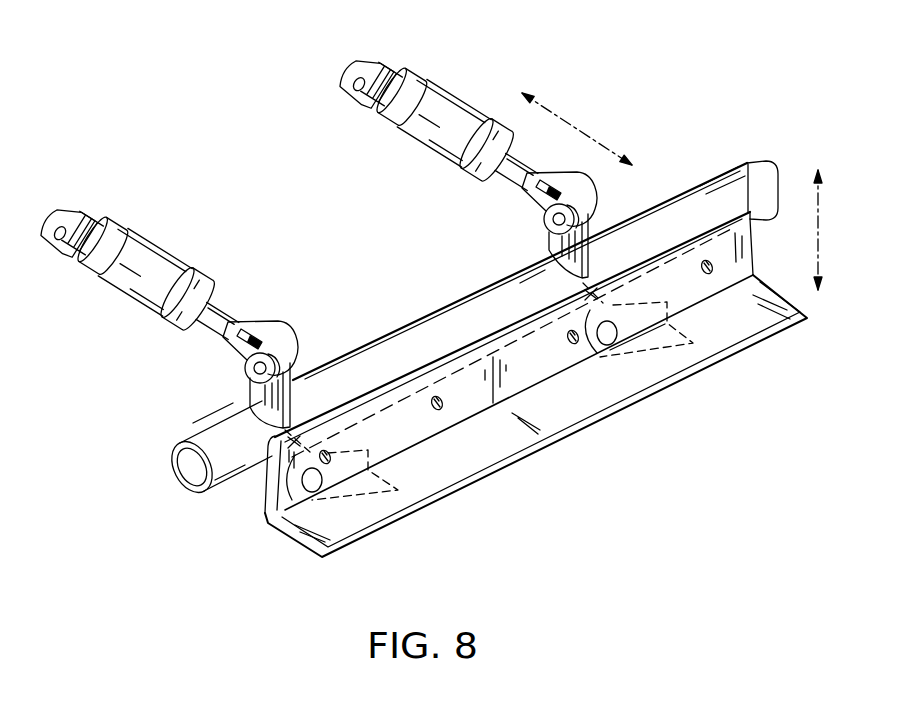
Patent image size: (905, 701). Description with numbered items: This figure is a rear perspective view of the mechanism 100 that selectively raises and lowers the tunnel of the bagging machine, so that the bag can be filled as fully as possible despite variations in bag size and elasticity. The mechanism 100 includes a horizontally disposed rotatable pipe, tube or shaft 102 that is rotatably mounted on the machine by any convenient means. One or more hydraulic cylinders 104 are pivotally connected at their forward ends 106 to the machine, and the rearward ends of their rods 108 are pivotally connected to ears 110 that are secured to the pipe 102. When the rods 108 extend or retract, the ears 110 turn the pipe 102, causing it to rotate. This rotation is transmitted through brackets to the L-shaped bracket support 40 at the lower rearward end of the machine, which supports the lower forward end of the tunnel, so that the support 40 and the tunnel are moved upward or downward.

The L-shaped bracket support 40 is at (480, 447).
The mechanism 100 is at (406, 306).
The rotatable pipe 102 is at (212, 438).
The hydraulic cylinder 104 is at (137, 249).
The forward end 106 is at (62, 202).
The rod 108 is at (220, 311).
The ear 110 is at (273, 397).